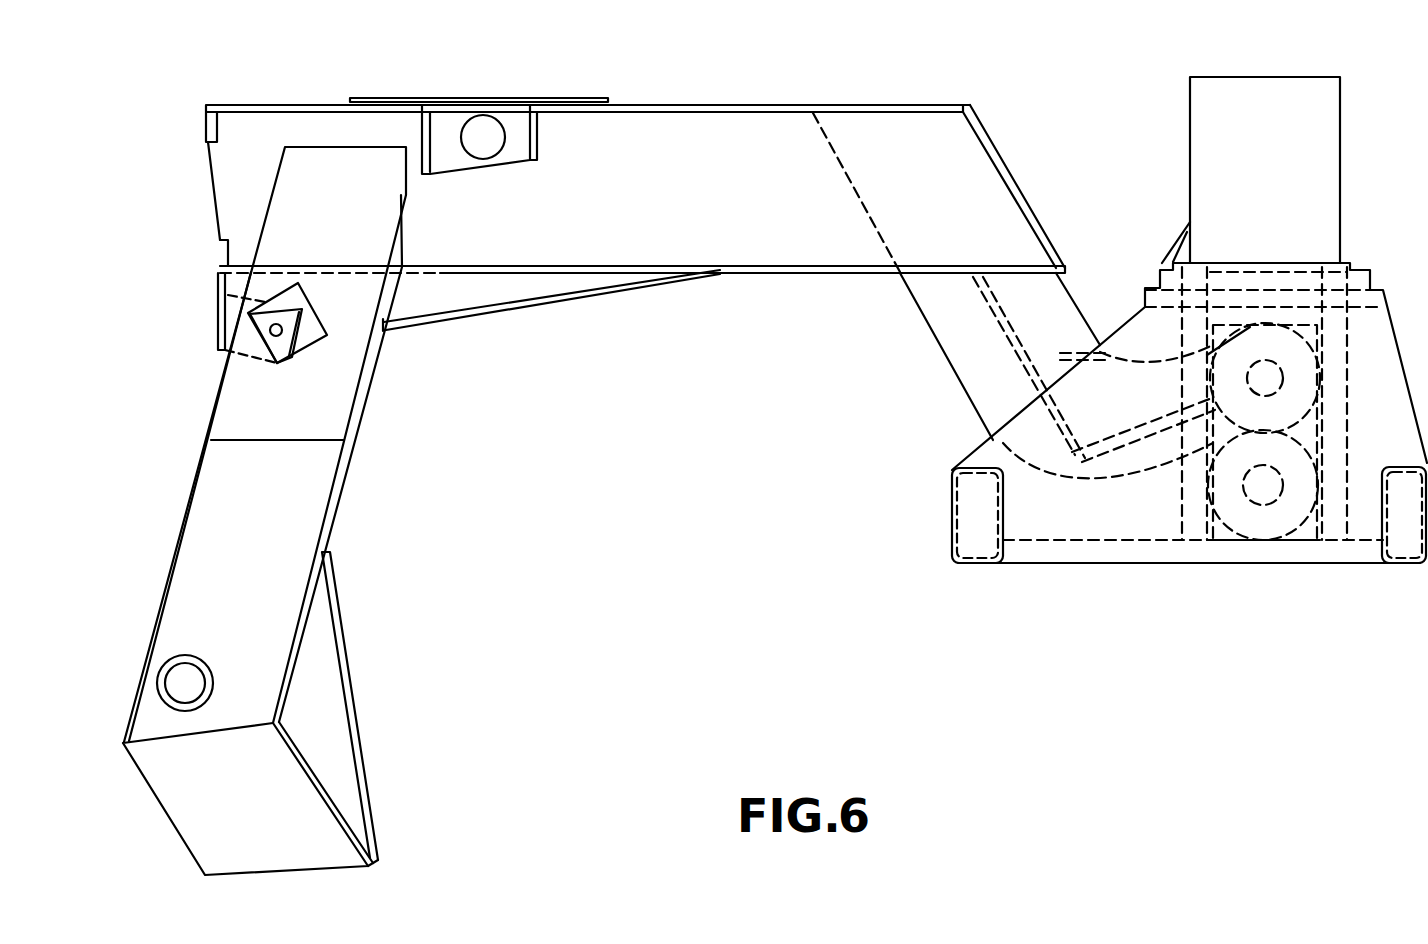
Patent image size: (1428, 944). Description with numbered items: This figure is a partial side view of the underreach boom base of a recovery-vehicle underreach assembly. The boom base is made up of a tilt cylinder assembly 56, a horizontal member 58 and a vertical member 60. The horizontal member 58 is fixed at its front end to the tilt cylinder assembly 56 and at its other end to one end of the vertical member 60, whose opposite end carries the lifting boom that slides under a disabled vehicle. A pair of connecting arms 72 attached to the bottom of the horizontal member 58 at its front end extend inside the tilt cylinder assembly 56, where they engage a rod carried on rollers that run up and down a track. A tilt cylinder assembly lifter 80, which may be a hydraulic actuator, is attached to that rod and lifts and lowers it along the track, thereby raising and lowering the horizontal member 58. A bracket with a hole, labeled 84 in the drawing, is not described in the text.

The tilt cylinder assembly 56 is at (983, 440).
The horizontal member 58 is at (685, 104).
The vertical member 60 is at (197, 470).
The connecting arms 72 is at (922, 313).
The tilt cylinder assembly lifter 80 is at (1265, 77).
The mounting bracket 84 is at (488, 130).